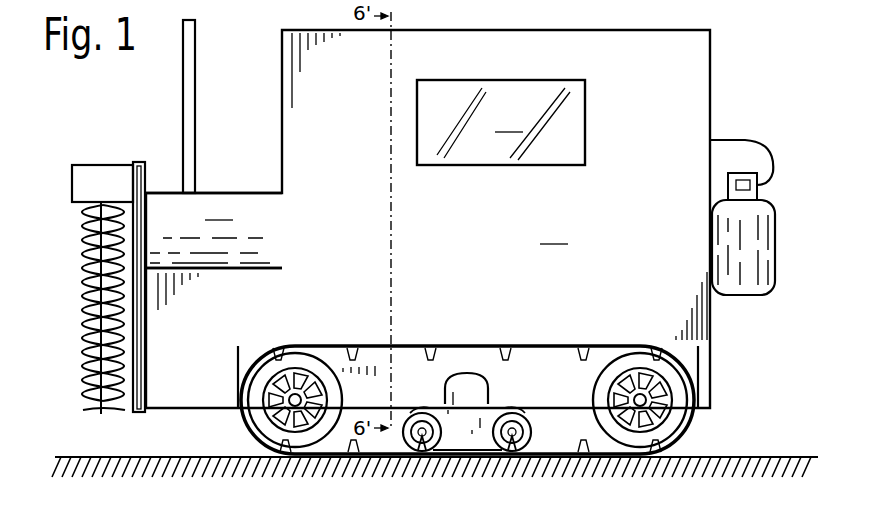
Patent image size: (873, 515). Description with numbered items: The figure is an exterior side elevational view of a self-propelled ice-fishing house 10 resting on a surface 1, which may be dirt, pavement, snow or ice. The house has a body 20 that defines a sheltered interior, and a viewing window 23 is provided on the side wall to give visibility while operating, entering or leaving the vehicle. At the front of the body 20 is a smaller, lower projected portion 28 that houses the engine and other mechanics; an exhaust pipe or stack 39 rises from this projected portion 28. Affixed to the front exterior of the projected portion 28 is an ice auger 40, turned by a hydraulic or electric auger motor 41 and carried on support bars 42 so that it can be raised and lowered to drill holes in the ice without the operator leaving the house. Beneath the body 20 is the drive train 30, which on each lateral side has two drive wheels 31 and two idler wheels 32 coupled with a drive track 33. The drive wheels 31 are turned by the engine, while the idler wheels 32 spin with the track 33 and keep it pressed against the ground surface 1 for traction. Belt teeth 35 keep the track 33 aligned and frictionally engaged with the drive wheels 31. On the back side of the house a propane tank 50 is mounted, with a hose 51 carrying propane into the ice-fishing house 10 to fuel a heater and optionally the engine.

The surface 1 is at (733, 470).
The self-propelled ice-fishing house 10 is at (464, 204).
The body 20 is at (713, 82).
The viewing window 23 is at (501, 122).
The projected portion 28 is at (214, 230).
The drive train 30 is at (475, 372).
The drive wheel 31 is at (292, 358).
The idler wheel 32 is at (497, 405).
The drive track 33 is at (687, 377).
The belt teeth 35 is at (262, 449).
The exhaust pipe or stack 39 is at (190, 68).
The ice auger 40 is at (87, 278).
The auger motor 41 is at (88, 168).
The support bar 42 is at (139, 160).
The propane tank 50 is at (763, 288).
The hose 51 is at (733, 138).